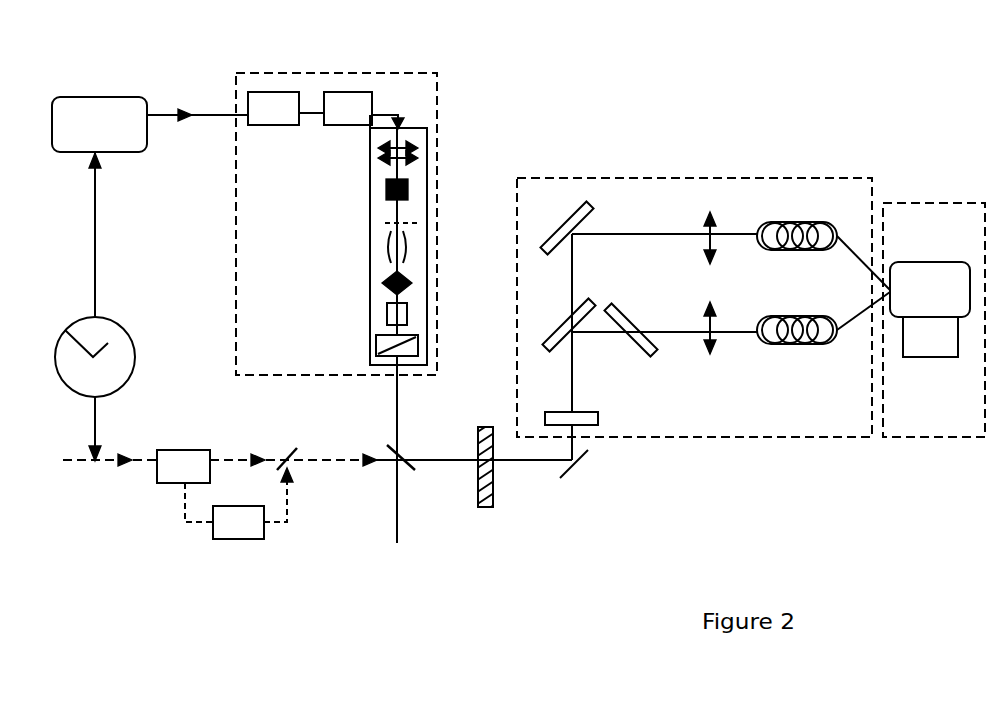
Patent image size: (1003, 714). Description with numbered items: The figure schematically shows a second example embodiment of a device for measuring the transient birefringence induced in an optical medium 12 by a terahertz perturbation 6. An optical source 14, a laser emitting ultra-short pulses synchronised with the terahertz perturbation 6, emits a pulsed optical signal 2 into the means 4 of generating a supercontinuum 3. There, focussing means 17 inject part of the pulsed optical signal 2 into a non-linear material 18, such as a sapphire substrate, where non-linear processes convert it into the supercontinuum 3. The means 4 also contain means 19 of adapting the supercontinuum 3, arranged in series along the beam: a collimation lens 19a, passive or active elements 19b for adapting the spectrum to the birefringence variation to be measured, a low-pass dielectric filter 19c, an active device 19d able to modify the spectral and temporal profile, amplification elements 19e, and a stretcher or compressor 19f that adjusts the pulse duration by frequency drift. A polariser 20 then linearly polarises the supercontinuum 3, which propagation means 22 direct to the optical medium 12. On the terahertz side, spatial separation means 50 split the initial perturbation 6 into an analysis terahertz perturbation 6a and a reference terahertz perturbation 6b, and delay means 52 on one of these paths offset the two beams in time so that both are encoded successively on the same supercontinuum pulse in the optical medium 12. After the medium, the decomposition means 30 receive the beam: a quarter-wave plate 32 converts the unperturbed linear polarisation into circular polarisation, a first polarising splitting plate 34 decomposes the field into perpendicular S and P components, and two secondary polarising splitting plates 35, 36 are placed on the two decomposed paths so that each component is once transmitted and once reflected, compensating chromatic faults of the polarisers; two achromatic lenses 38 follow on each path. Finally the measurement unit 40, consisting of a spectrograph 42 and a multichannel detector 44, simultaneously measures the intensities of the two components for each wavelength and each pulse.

The pulsed optical signal 2 is at (184, 115).
The optical source 14 is at (99, 124).
The means of generating a supercontinuum 4 is at (336, 224).
The focussing means 17 is at (273, 108).
The non-linear material 18 is at (335, 108).
The supercontinuum 3 is at (398, 125).
The means of adapting the supercontinuum 19 is at (427, 168).
The collimation lens 19a is at (380, 158).
The elements for adapting the spectrum 19b is at (386, 194).
The low-pass dielectric filter 19c is at (385, 223).
The active device 19d is at (387, 255).
The amplification elements 19e is at (383, 286).
The stretcher or compressor 19f is at (387, 318).
The polariser 20 is at (418, 346).
The propagation means 22 is at (400, 474).
The terahertz perturbation 6 is at (125, 460).
The analysis terahertz perturbation 6a is at (257, 460).
The reference terahertz perturbation 6b is at (298, 478).
The spatial separation means 50 is at (183, 466).
The delay means 52 is at (236, 507).
The optical medium 12 is at (493, 507).
The decomposition means 30 is at (694, 307).
The quarter-wave plate 32 is at (598, 425).
The first polarising splitting plate 34 is at (573, 337).
The secondary polarising splitting plate 35 is at (653, 352).
The secondary polarising splitting plate 36 is at (583, 203).
The achromatic lens 38 is at (708, 213).
The measurement unit 40 is at (934, 320).
The spectrograph 42 is at (930, 289).
The multichannel detector 44 is at (930, 337).